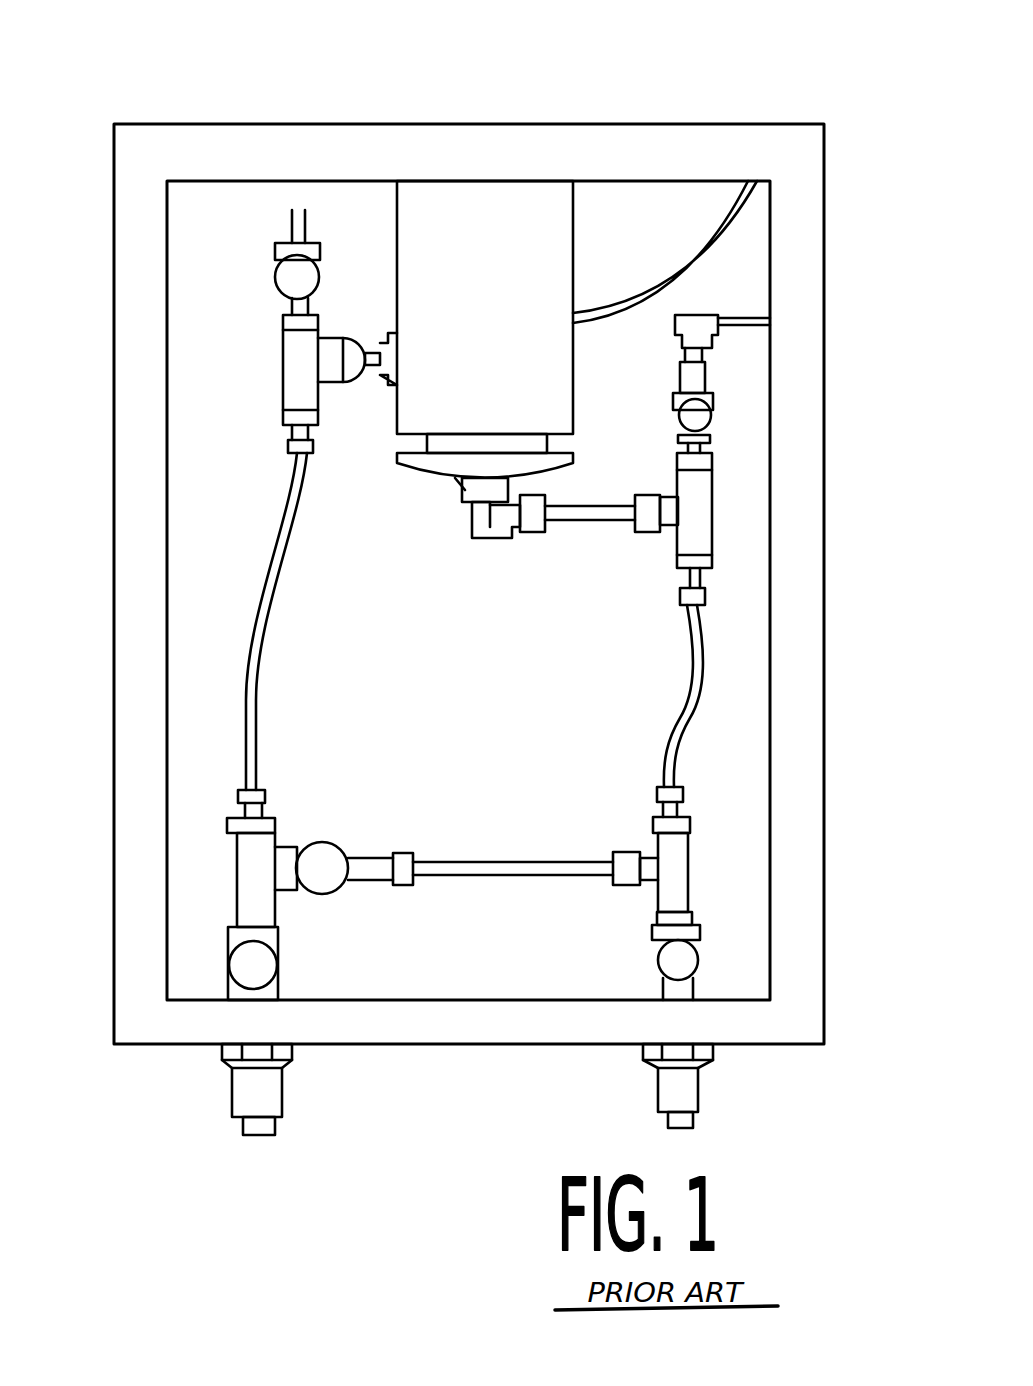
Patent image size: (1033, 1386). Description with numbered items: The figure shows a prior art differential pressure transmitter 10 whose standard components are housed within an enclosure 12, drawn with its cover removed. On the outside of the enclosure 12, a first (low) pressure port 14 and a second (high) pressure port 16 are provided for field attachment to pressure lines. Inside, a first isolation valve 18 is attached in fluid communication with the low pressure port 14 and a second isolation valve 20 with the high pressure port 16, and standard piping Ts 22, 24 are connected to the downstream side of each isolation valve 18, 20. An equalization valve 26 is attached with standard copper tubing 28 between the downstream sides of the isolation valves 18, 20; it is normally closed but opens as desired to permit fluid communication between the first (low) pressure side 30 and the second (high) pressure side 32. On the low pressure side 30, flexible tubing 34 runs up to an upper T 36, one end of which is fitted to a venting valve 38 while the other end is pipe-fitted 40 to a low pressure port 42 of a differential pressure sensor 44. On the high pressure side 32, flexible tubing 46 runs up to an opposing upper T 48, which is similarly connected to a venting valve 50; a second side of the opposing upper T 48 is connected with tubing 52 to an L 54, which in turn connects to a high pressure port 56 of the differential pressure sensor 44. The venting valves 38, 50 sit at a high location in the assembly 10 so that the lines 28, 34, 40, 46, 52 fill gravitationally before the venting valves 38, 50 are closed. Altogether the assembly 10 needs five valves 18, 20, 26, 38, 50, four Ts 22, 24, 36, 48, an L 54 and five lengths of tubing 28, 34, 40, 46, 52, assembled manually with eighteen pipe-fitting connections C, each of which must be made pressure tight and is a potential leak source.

The differential pressure transmitter 10 is at (688, 67).
The enclosure 12 is at (130, 231).
The first (low) pressure port 14 is at (258, 1087).
The second (high) pressure port 16 is at (680, 1082).
The first isolation valve 18 is at (245, 965).
The second isolation valve 20 is at (680, 958).
The piping T 22 is at (248, 865).
The piping T 24 is at (678, 862).
The equalization valve 26 is at (322, 860).
The copper tubing 28 is at (490, 862).
The first (low) pressure side 30 is at (203, 823).
The second (high) pressure side 32 is at (742, 816).
The flexible tubing 34 is at (255, 648).
The upper T 36 is at (295, 368).
The venting valve 38 is at (290, 272).
The pipe fitting 40 is at (372, 352).
The low pressure port 42 is at (393, 333).
The differential pressure sensor 44 is at (510, 200).
The flexible tubing 46 is at (692, 690).
The opposing upper T 48 is at (698, 515).
The venting valve 50 is at (695, 412).
The tubing 52 is at (588, 512).
The L 54 is at (483, 540).
The high pressure port 56 is at (455, 480).
The pipe-fitting connection C is at (487, 633).